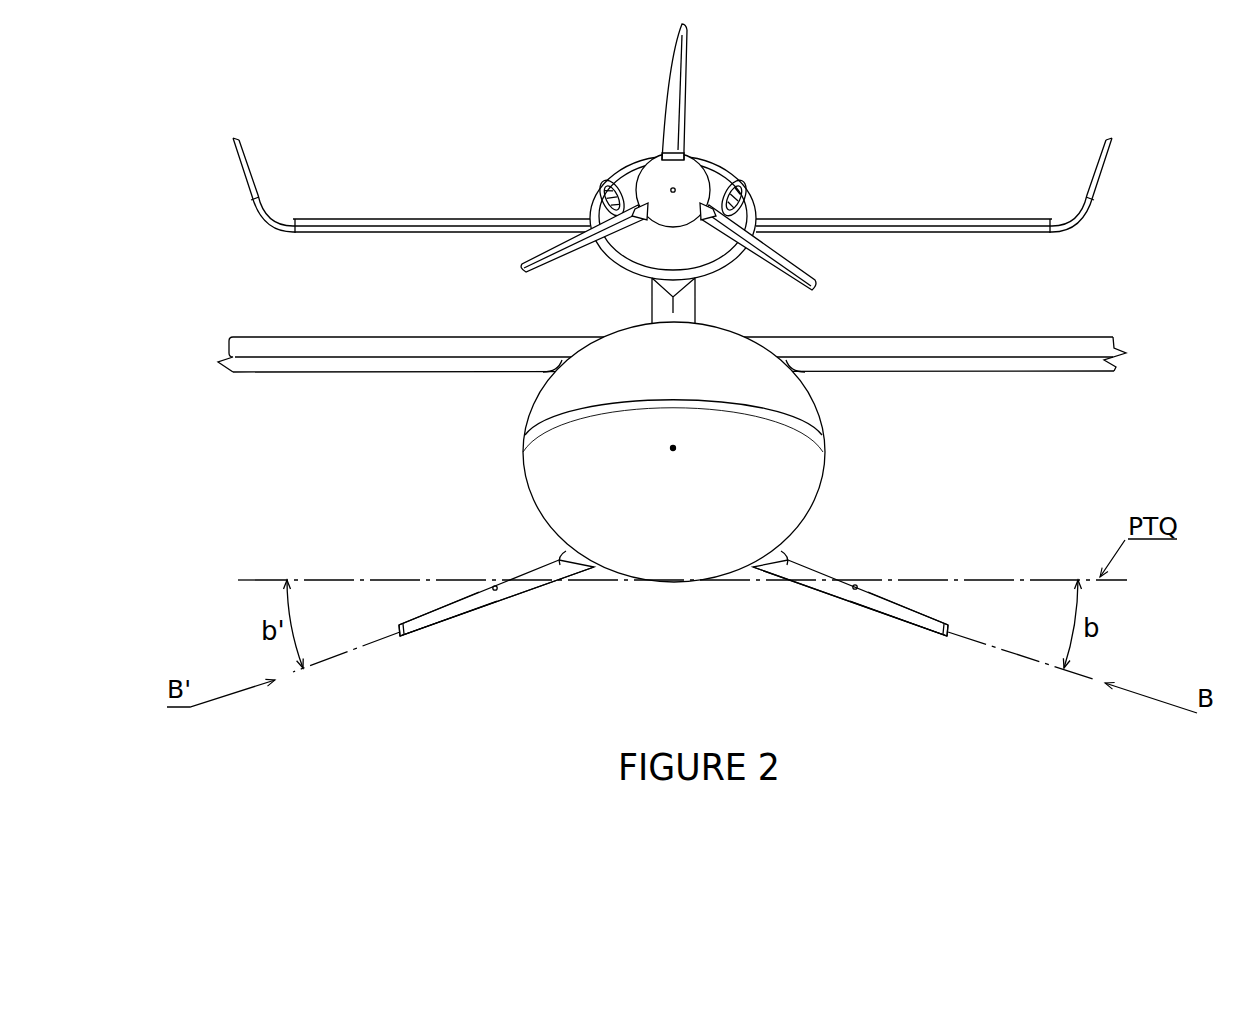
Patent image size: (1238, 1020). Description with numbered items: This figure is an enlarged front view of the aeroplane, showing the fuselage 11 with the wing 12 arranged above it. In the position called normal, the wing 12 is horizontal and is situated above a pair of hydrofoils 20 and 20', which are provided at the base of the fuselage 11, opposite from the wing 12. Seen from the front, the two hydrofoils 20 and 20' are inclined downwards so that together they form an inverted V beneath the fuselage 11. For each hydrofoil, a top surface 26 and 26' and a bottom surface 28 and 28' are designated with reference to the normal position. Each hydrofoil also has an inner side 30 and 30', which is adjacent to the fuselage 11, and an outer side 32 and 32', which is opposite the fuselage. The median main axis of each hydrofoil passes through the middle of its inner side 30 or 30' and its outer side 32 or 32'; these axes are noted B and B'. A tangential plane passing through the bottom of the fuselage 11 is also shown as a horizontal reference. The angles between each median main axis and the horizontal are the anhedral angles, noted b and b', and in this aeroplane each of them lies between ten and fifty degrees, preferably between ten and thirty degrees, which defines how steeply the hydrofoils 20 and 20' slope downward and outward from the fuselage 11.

The fuselage 11 is at (710, 498).
The wing 12 is at (938, 341).
The hydrofoil 20 is at (850, 566).
The hydrofoil 20' is at (496, 569).
The top surface 26 is at (946, 566).
The top surface 26' is at (419, 569).
The bottom surface 28 is at (850, 641).
The bottom surface 28' is at (497, 647).
The inner side 30 is at (748, 545).
The inner side 30' is at (614, 545).
The outer side 32 is at (987, 672).
The outer side 32' is at (378, 676).